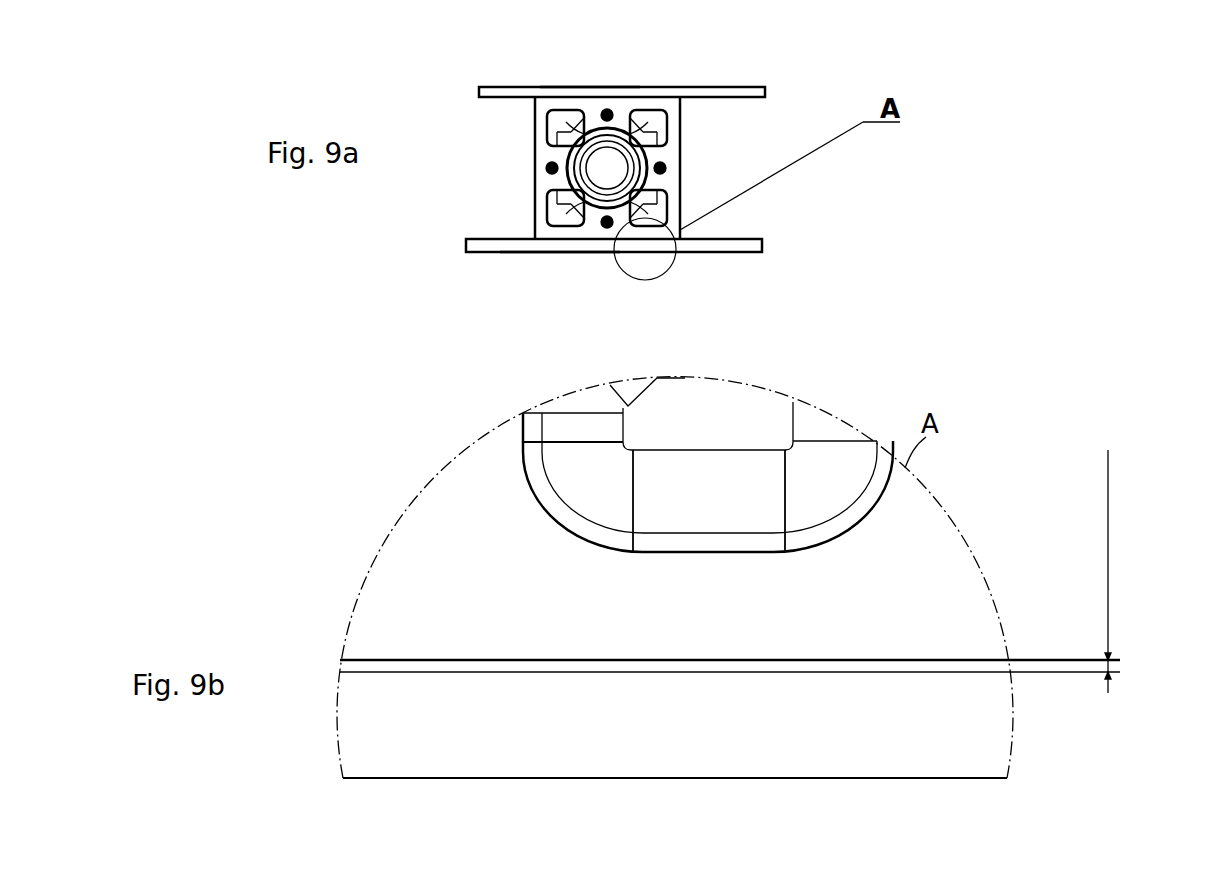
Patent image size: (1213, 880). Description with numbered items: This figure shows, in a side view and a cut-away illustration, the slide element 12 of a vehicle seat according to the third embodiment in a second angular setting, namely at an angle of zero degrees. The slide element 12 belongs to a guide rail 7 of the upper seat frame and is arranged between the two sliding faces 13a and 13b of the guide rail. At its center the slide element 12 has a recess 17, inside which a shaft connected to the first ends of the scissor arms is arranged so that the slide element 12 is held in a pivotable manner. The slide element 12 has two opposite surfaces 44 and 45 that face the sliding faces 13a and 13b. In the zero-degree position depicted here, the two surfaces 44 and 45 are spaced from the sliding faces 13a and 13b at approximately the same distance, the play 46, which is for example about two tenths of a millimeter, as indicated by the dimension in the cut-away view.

In FIG. 9b, the guide rail 7 is at (710, 760).
In FIG. 9a, the slide element 12 is at (682, 148).
In FIG. 9a, the sliding face 13a is at (767, 118).
In FIG. 9a, the sliding face 13b is at (748, 237).
In FIG. 9b, the sliding face 13b is at (860, 672).
In FIG. 9a, the recess 17 is at (618, 114).
In FIG. 9a, the surface 44 is at (585, 86).
In FIG. 9a, the surface 45 is at (556, 254).
In FIG. 9b, the surface 45 is at (943, 662).
In FIG. 9b, the play 46 is at (1108, 535).